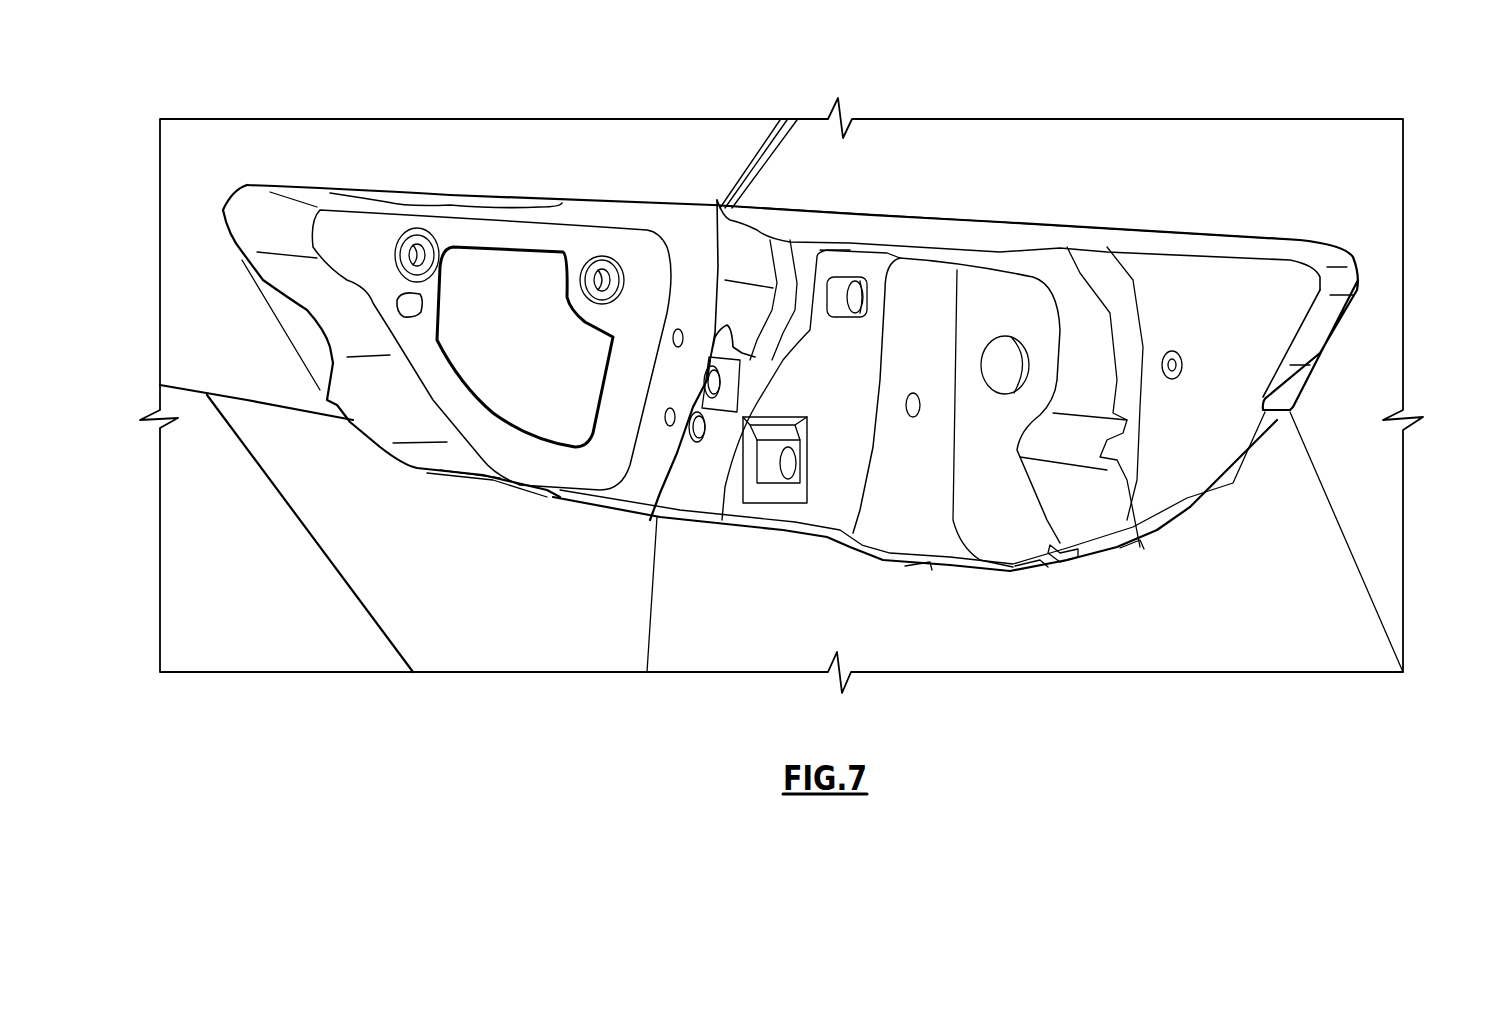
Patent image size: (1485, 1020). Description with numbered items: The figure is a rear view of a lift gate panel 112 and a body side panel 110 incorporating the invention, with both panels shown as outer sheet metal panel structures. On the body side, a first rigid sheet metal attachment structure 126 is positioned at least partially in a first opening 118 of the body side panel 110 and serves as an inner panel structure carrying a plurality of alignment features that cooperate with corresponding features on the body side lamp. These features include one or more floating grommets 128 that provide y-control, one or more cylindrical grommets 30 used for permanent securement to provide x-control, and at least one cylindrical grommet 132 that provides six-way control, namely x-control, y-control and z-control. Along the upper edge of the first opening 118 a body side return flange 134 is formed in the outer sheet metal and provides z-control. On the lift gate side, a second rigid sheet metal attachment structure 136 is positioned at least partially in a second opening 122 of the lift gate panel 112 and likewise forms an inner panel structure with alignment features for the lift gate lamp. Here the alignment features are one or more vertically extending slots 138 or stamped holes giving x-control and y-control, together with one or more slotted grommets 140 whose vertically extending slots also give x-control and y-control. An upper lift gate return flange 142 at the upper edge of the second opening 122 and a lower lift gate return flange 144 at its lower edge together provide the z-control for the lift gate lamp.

The body side panel 110 is at (1377, 485).
The lift gate panel 112 is at (177, 440).
The first opening 118 is at (1007, 553).
The second opening 122 is at (607, 507).
The first rigid sheet metal attachment structure 126 is at (942, 504).
The floating grommets 128 is at (778, 470).
The cylindrical grommet 132 is at (1177, 357).
The body side return flange 134 is at (895, 235).
The second rigid sheet metal attachment structure 136 is at (622, 479).
The vertically extending slots 138 is at (672, 338).
The slotted grommets 140 is at (397, 247).
The upper lift gate return flange 142 is at (523, 202).
The lower lift gate return flange 144 is at (497, 480).
The cylindrical grommets 30 is at (700, 440).